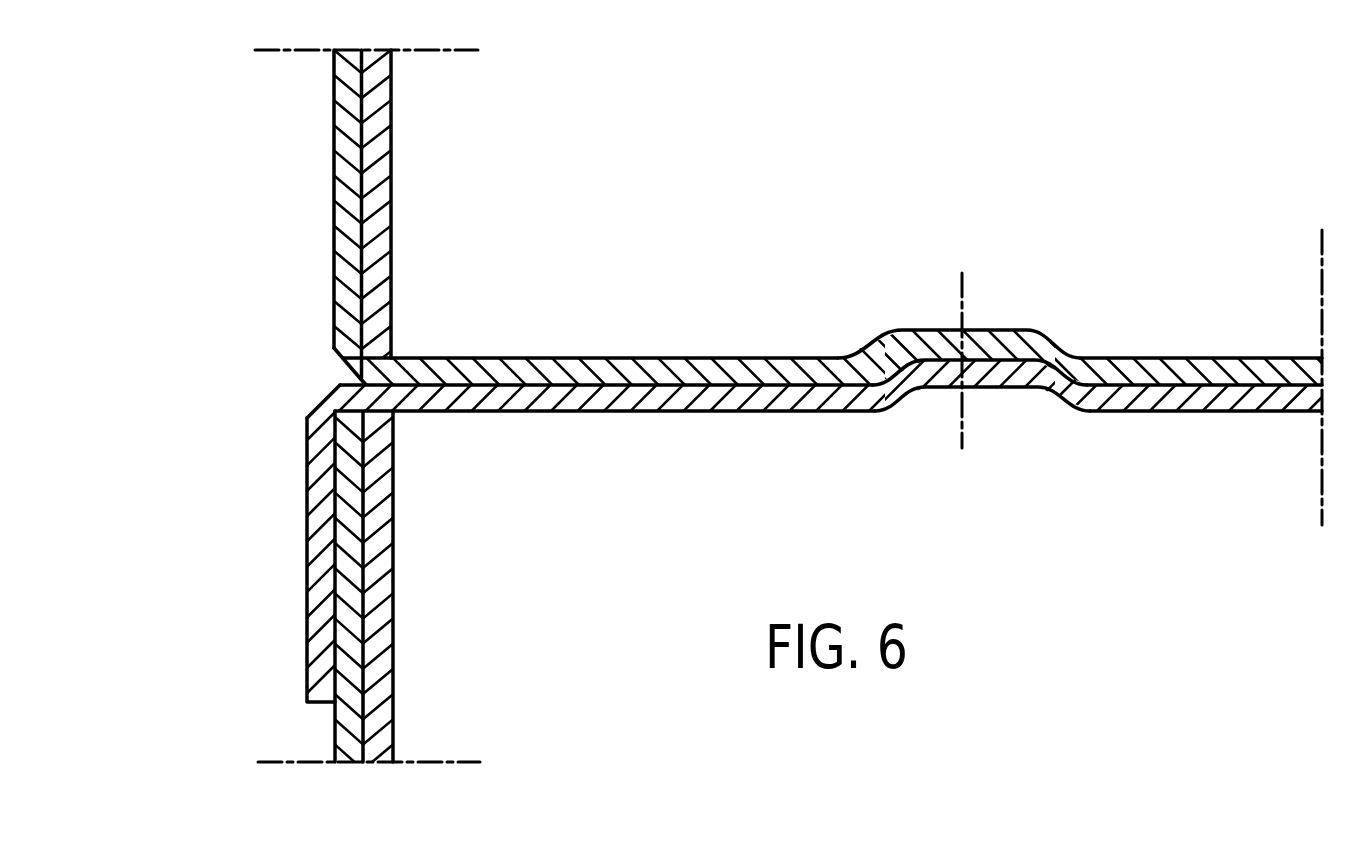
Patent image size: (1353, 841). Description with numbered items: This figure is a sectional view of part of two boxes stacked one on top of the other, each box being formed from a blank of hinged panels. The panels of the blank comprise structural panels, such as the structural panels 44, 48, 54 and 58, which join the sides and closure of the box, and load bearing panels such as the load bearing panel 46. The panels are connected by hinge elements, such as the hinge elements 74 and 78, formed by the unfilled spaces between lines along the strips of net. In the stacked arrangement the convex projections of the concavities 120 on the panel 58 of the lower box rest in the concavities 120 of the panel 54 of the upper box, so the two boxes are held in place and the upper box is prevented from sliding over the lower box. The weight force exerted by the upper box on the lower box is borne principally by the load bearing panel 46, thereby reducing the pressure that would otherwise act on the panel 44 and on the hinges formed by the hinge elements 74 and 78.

The structural panel 44 is at (333, 160).
The load bearing panel 46 is at (393, 165).
The structural panel 48 is at (307, 515).
The structural panel 54 is at (583, 358).
The structural panel 58 is at (730, 411).
The hinge element 74 is at (345, 362).
The hinge element 78 is at (323, 398).
The concavity 120 is at (1016, 330).